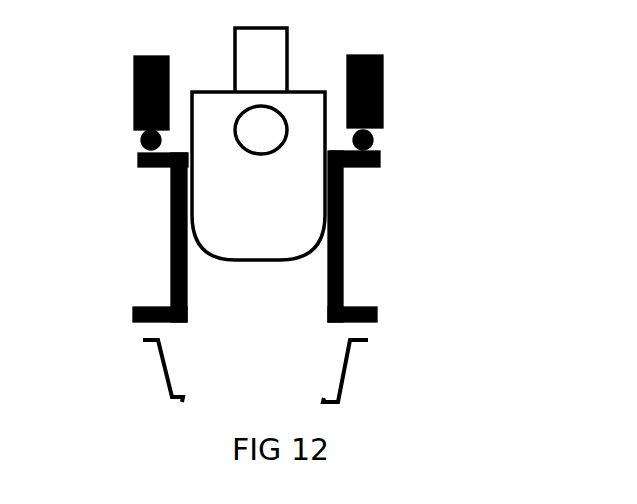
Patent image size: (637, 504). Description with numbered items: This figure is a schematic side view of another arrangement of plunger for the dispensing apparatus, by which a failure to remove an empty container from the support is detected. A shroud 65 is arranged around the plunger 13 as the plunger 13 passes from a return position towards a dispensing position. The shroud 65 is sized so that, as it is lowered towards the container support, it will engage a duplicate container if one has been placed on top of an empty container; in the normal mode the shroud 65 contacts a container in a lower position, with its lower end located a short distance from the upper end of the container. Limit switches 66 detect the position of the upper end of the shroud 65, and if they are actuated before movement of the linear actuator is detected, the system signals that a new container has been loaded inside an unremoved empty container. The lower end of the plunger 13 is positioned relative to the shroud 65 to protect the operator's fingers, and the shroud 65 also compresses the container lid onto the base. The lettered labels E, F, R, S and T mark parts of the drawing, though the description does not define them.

The plunger 13 is at (303, 205).
The shroud 65 is at (341, 238).
The limit switches 66 is at (138, 140).
The actuator E is at (128, 93).
The actuator F is at (384, 91).
The rounded bottom region R is at (290, 263).
The support foot S is at (382, 320).
The leg T is at (375, 340).